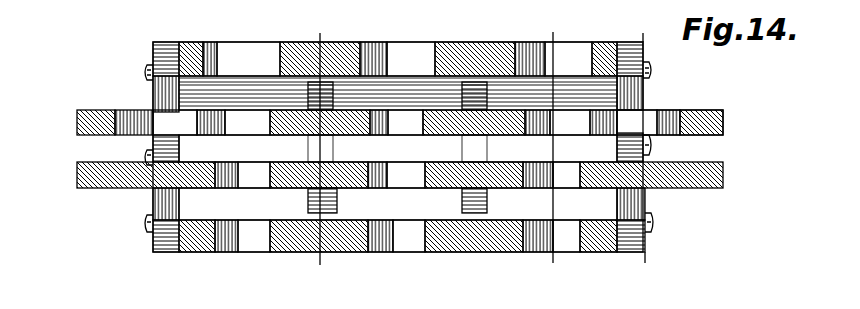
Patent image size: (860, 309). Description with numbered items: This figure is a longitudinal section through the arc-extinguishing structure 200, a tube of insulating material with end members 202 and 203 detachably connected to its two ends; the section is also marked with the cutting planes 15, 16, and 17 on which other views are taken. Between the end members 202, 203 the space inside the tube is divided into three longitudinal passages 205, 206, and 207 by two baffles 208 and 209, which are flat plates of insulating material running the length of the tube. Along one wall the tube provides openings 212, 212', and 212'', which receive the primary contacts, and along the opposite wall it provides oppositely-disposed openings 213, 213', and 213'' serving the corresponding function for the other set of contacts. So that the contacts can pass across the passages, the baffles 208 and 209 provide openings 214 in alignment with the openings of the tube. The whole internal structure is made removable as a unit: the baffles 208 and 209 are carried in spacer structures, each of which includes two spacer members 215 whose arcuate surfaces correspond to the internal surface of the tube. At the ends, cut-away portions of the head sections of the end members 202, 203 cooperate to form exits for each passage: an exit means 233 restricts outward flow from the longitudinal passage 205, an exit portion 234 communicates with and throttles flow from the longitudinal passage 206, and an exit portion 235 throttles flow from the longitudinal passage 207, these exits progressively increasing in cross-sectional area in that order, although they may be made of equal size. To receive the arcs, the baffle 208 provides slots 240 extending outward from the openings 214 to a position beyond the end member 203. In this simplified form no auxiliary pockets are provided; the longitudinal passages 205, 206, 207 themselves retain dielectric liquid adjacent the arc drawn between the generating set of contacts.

The arc-extinguishing structure 200 is at (188, 42).
The end member 202 is at (167, 245).
The end member 203 is at (645, 247).
The longitudinal passage 205 is at (347, 83).
The longitudinal passage 206 is at (355, 143).
The longitudinal passage 207 is at (353, 203).
The baffle 208 is at (723, 115).
The baffle 209 is at (685, 183).
The opening 212 is at (248, 44).
The opening 212' is at (431, 41).
The opening 212'' is at (579, 38).
The opening 213 is at (235, 254).
The opening 213' is at (427, 258).
The opening 213'' is at (583, 261).
The opening 214 is at (248, 123).
The spacer member 215 is at (475, 90).
The exit means 233 is at (637, 92).
The exit portion 234 is at (652, 150).
The exit portion 235 is at (638, 202).
The slot 240 is at (140, 110).
The section line 15 is at (320, 33).
The section line 16 is at (553, 32).
The section line 17 is at (643, 33).